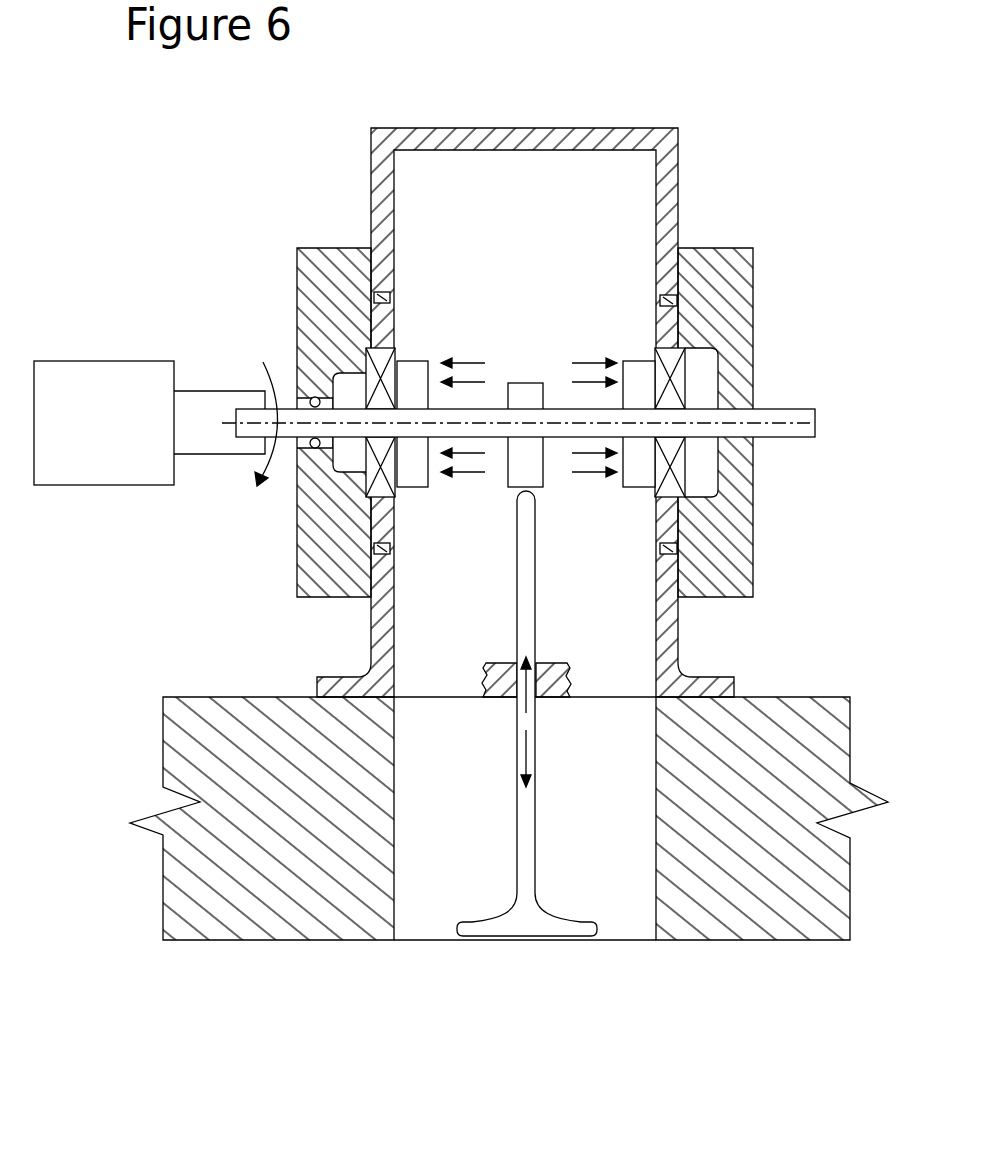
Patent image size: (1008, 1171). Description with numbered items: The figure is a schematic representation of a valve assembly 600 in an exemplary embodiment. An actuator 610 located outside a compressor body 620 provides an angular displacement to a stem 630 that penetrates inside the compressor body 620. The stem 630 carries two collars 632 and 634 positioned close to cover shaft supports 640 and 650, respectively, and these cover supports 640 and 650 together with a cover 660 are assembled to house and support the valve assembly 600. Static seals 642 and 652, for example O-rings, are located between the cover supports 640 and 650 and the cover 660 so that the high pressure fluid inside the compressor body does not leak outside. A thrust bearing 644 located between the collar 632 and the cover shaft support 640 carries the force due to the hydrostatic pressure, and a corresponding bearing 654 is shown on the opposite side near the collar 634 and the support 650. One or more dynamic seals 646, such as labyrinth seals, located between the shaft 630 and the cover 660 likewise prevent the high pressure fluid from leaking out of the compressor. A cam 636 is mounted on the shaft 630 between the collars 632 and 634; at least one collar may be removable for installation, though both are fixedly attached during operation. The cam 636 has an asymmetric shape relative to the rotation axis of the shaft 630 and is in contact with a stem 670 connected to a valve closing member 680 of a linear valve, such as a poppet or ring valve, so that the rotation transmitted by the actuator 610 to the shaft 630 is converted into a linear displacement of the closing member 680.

The valve assembly 600 is at (735, 96).
The actuator 610 is at (85, 370).
The compressor body 620 is at (772, 722).
The stem 630 is at (298, 398).
The collar 632 is at (415, 470).
The collar 634 is at (635, 470).
The cam 636 is at (528, 395).
The cover shaft support 640 is at (340, 578).
The static seal 642 is at (374, 297).
The thrust bearing 644 is at (368, 352).
The dynamic seal 646 is at (312, 410).
The cover shaft support 650 is at (720, 548).
The static seal 652 is at (676, 300).
The bearing 654 is at (668, 372).
The cover 660 is at (541, 140).
The stem 670 is at (532, 607).
The valve closing member 680 is at (520, 910).